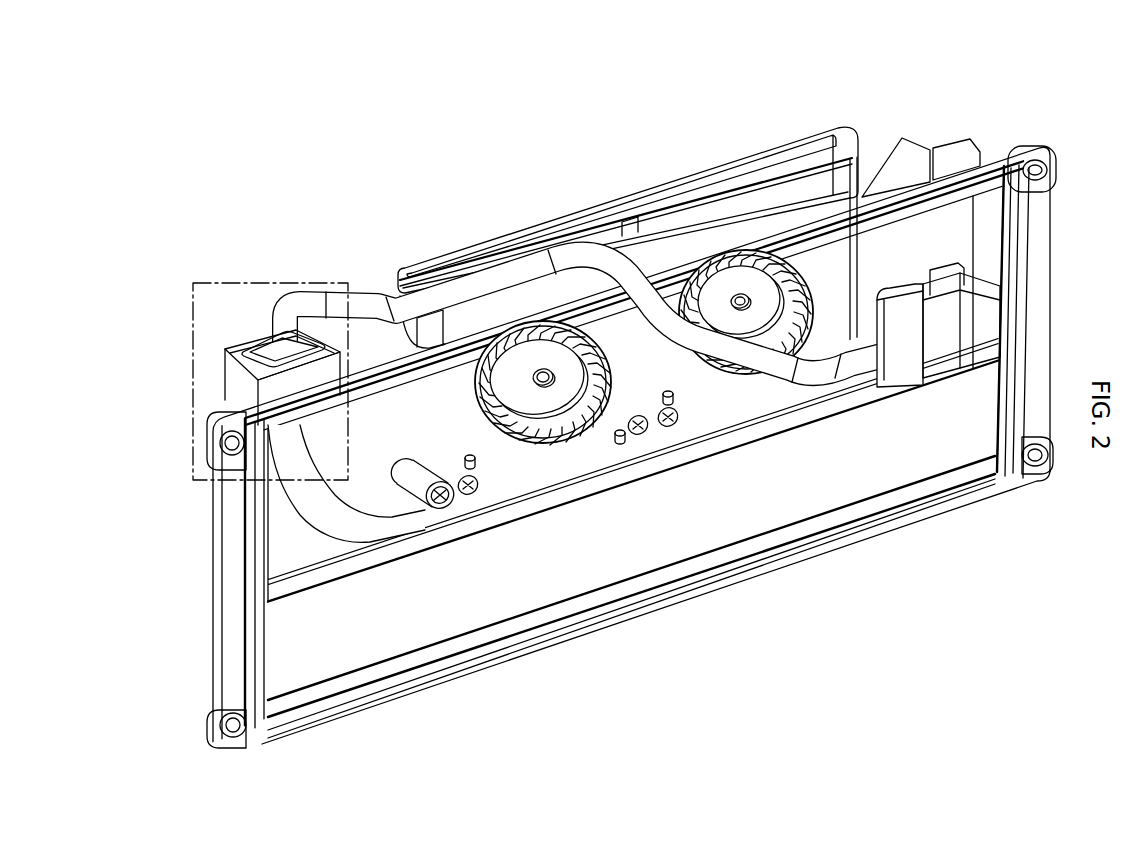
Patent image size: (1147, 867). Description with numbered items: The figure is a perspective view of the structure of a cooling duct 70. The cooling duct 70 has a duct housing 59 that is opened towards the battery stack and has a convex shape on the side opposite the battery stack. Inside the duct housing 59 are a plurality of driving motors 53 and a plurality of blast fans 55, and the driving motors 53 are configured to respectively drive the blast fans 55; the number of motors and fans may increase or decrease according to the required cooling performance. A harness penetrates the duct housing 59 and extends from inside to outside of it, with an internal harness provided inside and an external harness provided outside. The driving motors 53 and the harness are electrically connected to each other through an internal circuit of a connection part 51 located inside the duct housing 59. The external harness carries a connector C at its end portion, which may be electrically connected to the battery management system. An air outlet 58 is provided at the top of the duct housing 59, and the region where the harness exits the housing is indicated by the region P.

The cooling duct 70 is at (344, 96).
The connection part 51 is at (500, 488).
The driving motor 53 is at (560, 382).
The blast fan 55 is at (525, 432).
The air duct 58 is at (690, 172).
The duct housing 59 is at (212, 655).
The pump P is at (249, 283).
The connector C is at (947, 378).